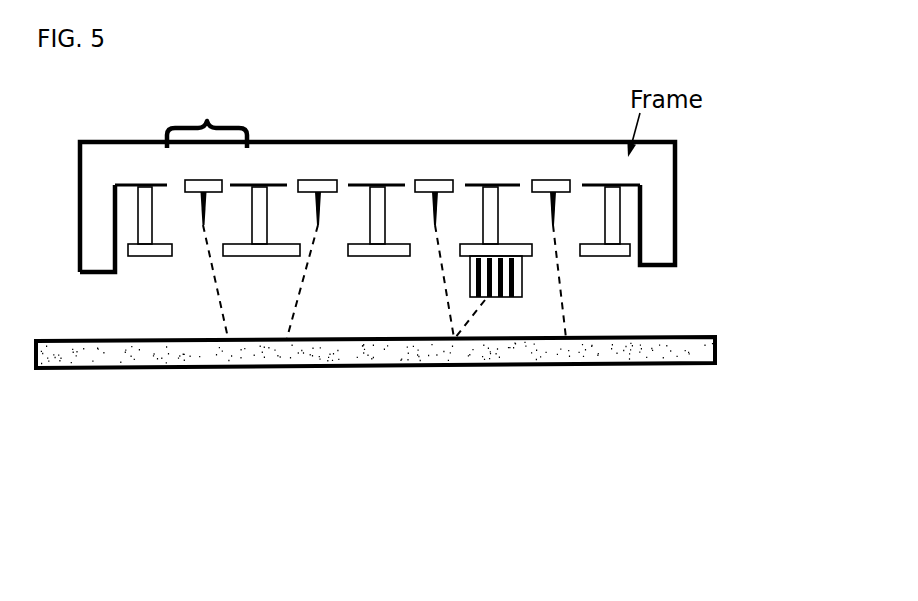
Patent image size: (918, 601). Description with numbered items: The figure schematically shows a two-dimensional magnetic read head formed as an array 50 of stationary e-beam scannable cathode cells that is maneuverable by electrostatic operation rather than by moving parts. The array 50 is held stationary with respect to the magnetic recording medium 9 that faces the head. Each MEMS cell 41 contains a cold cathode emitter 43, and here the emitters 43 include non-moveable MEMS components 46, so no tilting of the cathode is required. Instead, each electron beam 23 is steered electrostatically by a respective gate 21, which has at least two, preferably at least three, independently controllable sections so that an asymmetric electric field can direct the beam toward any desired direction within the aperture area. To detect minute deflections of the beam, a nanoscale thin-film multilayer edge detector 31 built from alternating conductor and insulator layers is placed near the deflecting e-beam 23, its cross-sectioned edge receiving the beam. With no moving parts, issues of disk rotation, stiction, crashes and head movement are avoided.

The magnetic recording medium 9 is at (416, 362).
The gate 21 is at (347, 260).
The E-beam 23 is at (220, 278).
The thin-film multilayer edge detector 31 is at (518, 292).
The MEMS cell 41 is at (205, 111).
The cold cathode emitter 43 is at (200, 212).
The non-moveable MEMS component 46 is at (431, 173).
The array 50 is at (782, 134).